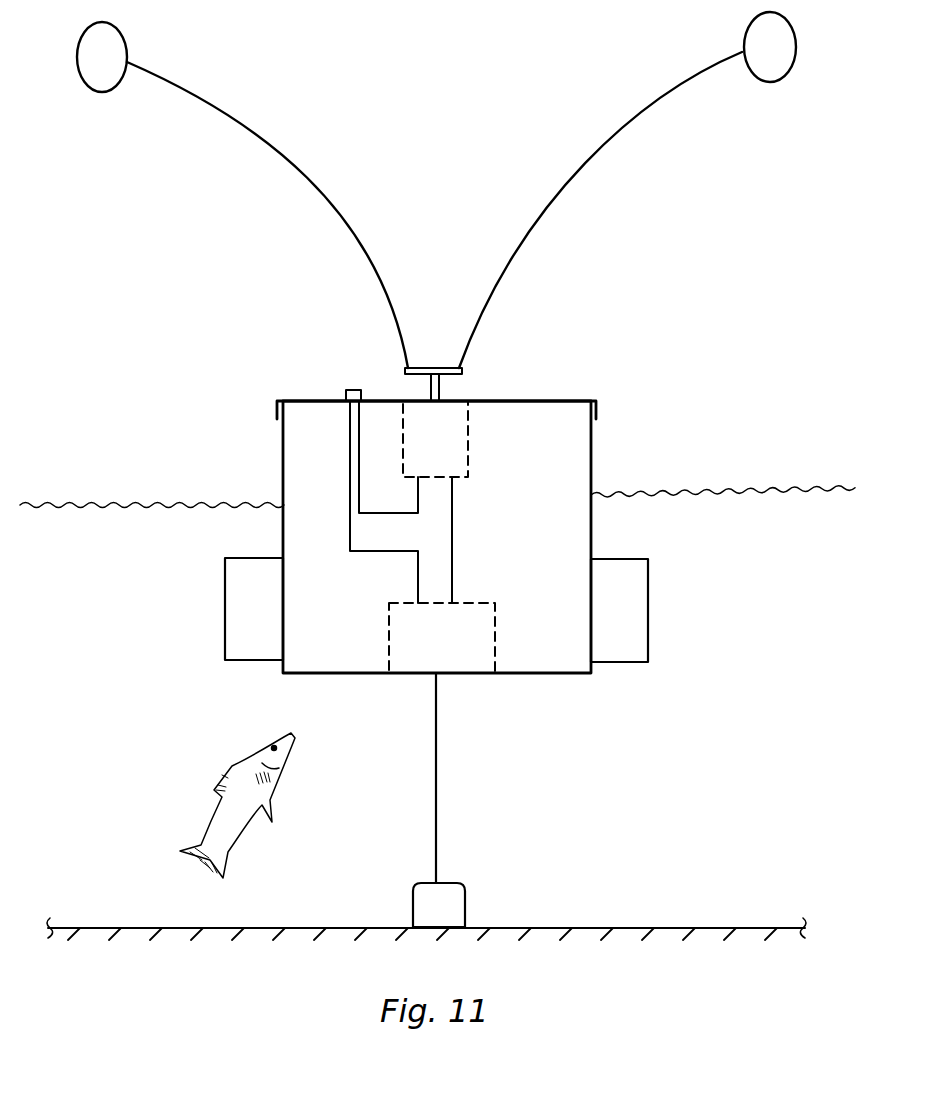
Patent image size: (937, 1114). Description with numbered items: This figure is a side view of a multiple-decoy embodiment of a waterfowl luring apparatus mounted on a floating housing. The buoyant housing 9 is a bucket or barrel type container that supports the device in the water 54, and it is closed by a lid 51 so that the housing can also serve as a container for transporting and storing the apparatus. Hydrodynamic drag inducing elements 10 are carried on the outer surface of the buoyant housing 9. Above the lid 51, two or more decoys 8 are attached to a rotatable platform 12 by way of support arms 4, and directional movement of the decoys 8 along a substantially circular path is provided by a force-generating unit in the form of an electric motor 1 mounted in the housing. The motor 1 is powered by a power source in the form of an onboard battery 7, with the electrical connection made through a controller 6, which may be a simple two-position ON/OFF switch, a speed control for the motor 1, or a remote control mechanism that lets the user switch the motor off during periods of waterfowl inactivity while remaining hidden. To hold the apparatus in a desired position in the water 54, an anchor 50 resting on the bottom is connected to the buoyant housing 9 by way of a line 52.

The motor 1 is at (468, 445).
The support arm 4 is at (313, 175).
The controller 6 is at (357, 390).
The power source 7 is at (494, 642).
The decoy 8 is at (78, 52).
The buoyant housing 9 is at (518, 674).
The hydrodynamic drag inducing element 10 is at (225, 608).
The rotatable platform 12 is at (425, 368).
The anchor 50 is at (465, 902).
The lid 51 is at (540, 400).
The line 52 is at (437, 800).
The water 54 is at (102, 689).